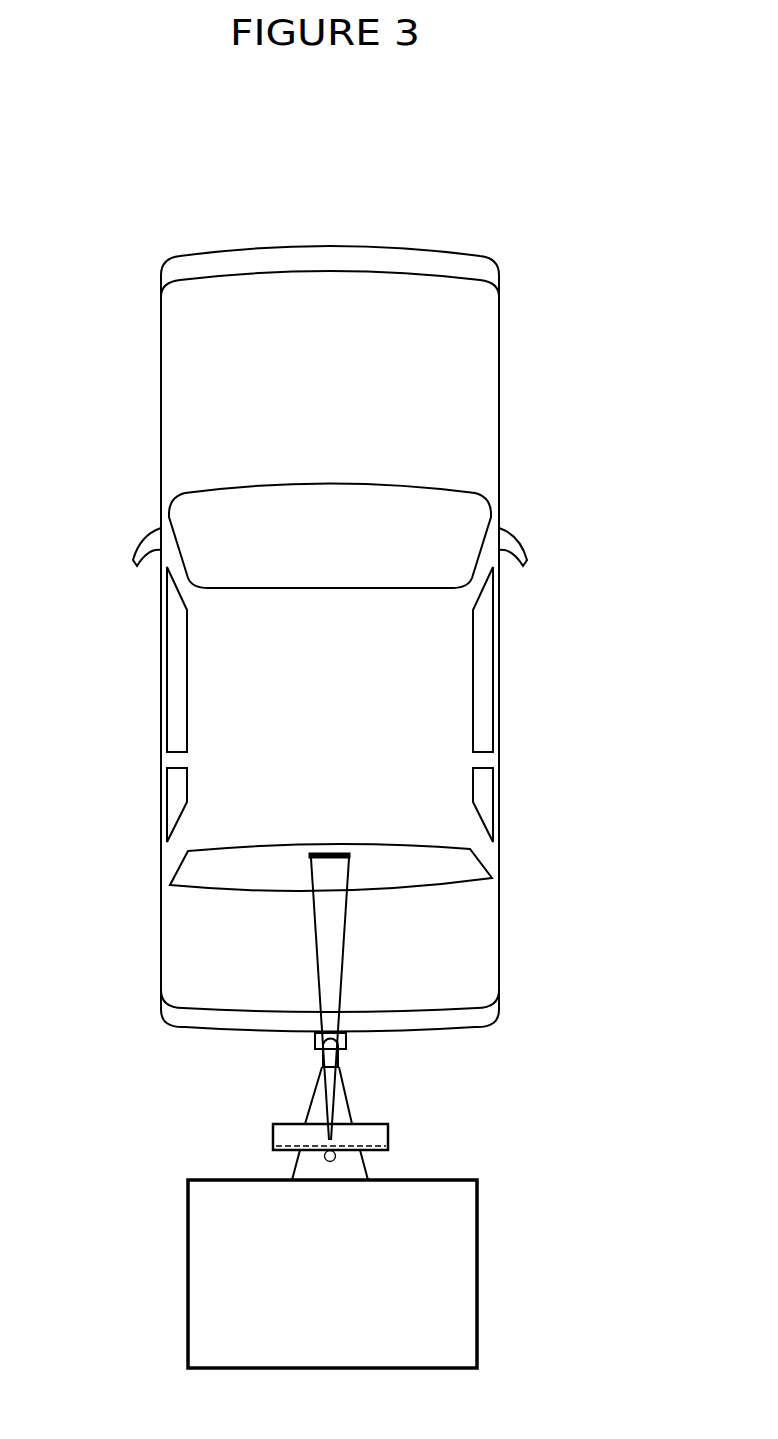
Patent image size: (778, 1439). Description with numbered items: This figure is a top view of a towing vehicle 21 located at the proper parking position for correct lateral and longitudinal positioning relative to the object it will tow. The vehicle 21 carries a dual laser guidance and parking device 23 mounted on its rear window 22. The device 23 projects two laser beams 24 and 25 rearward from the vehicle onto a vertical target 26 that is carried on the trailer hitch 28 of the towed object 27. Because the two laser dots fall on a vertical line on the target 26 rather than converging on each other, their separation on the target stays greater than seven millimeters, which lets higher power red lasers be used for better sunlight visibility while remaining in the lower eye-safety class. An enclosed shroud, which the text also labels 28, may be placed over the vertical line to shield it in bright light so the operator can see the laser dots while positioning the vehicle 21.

The vehicle 21 is at (343, 668).
The rear window 22 is at (422, 863).
The dual laser guidance and parking device 23 is at (297, 857).
The laser beam 24 is at (199, 999).
The laser beam 25 is at (454, 999).
The vertical target 26 is at (320, 1152).
The towed object 27 is at (325, 1242).
The trailer hitch 28 is at (362, 1117).